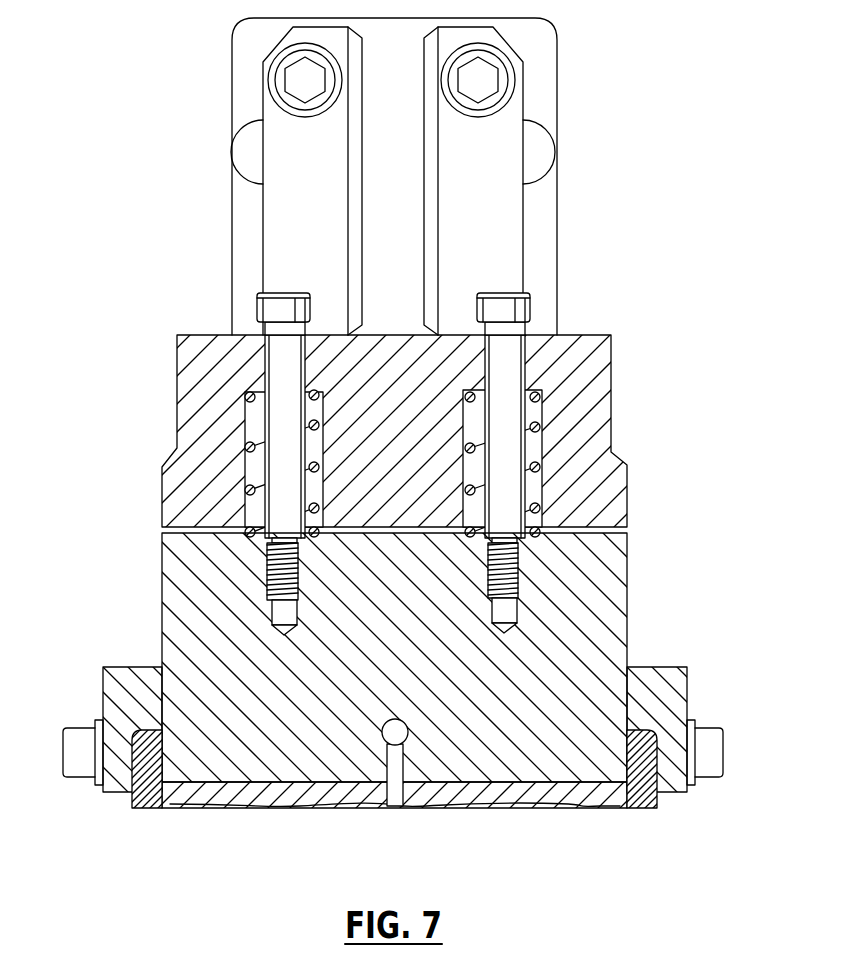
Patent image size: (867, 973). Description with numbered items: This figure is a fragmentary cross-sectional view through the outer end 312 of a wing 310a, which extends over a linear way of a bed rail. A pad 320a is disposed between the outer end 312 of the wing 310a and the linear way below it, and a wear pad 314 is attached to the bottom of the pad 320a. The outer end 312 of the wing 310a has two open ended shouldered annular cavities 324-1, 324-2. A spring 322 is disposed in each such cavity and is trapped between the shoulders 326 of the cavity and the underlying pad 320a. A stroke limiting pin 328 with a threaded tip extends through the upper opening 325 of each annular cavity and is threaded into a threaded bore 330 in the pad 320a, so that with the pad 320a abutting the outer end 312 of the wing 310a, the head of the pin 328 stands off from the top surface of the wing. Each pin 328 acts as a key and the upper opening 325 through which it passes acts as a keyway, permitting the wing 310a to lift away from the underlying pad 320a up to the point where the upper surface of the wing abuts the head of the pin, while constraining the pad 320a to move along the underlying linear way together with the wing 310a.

The wing 310a is at (592, 317).
The outer end 312 is at (612, 358).
The wear pad 314 is at (567, 809).
The pad 320a is at (158, 640).
The spring 322 is at (530, 547).
The open ended shouldered annular cavity 324-1 is at (248, 433).
The open ended shouldered annular cavity 324-2 is at (532, 413).
The upper opening 325 is at (528, 357).
The shoulders 326 is at (323, 412).
The stroke limiting pin 328 is at (277, 292).
The threaded bore 330 is at (267, 570).